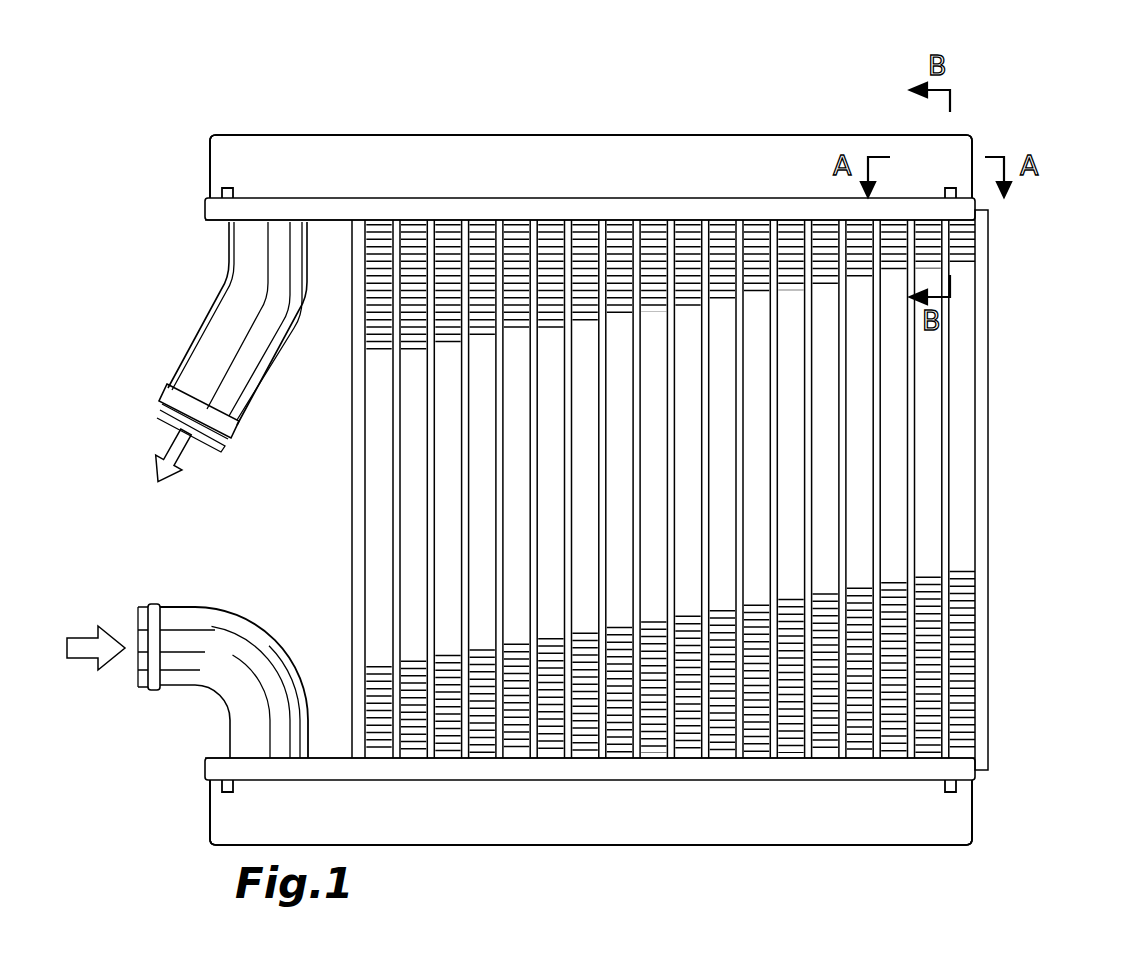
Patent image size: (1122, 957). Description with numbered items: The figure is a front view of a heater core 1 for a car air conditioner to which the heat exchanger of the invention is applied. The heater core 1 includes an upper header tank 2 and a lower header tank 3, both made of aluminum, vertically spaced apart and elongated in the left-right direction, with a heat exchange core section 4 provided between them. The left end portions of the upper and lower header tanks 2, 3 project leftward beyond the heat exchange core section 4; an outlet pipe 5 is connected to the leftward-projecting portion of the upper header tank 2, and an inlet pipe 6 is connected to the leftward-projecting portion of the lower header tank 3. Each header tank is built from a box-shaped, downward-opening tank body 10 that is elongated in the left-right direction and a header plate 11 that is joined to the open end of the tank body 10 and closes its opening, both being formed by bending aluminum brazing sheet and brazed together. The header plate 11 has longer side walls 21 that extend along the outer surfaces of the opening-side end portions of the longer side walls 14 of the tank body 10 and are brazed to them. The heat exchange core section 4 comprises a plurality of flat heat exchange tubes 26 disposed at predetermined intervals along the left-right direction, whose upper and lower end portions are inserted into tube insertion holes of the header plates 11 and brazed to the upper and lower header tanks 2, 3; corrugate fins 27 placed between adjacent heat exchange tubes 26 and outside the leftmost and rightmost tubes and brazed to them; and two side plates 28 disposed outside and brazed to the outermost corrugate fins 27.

The heater core 1 is at (590, 474).
The upper header tank 2 is at (566, 126).
The lower header tank 3 is at (508, 850).
The heat exchange core section 4 is at (689, 490).
The outlet pipe 5 is at (207, 373).
The inlet pipe 6 is at (192, 658).
The tank body 10 is at (650, 152).
The header plate 11 is at (212, 210).
The longer side walls of the tank body 14 is at (458, 152).
The longer side walls of the header plate 21 is at (390, 208).
The heat exchange tubes 26 is at (428, 518).
The corrugate fins 27 is at (415, 345).
The side plates 28 is at (352, 577).